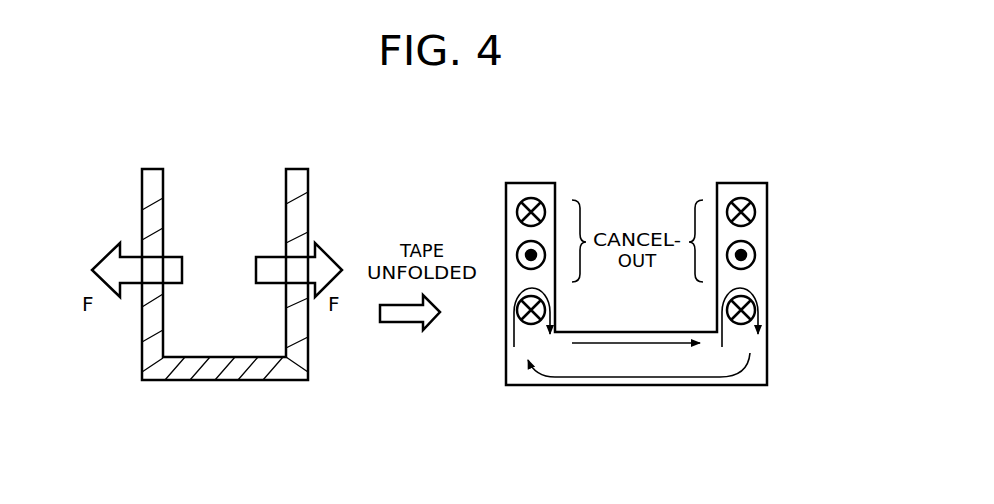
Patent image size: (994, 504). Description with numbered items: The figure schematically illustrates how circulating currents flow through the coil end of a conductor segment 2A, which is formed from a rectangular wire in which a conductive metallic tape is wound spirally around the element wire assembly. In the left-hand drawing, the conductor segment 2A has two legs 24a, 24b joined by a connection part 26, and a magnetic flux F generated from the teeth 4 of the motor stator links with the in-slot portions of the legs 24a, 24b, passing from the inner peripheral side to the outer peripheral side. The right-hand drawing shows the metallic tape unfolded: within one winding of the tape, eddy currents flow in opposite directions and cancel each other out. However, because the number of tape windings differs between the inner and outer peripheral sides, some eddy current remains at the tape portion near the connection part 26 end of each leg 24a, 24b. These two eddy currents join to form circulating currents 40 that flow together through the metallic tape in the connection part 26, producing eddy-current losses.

The teeth 4 is at (231, 287).
The conductor segment 2A is at (316, 171).
The leg 24a is at (142, 205).
The leg 24b is at (309, 189).
The connection part 26 is at (227, 383).
The circulating currents 40 is at (550, 376).